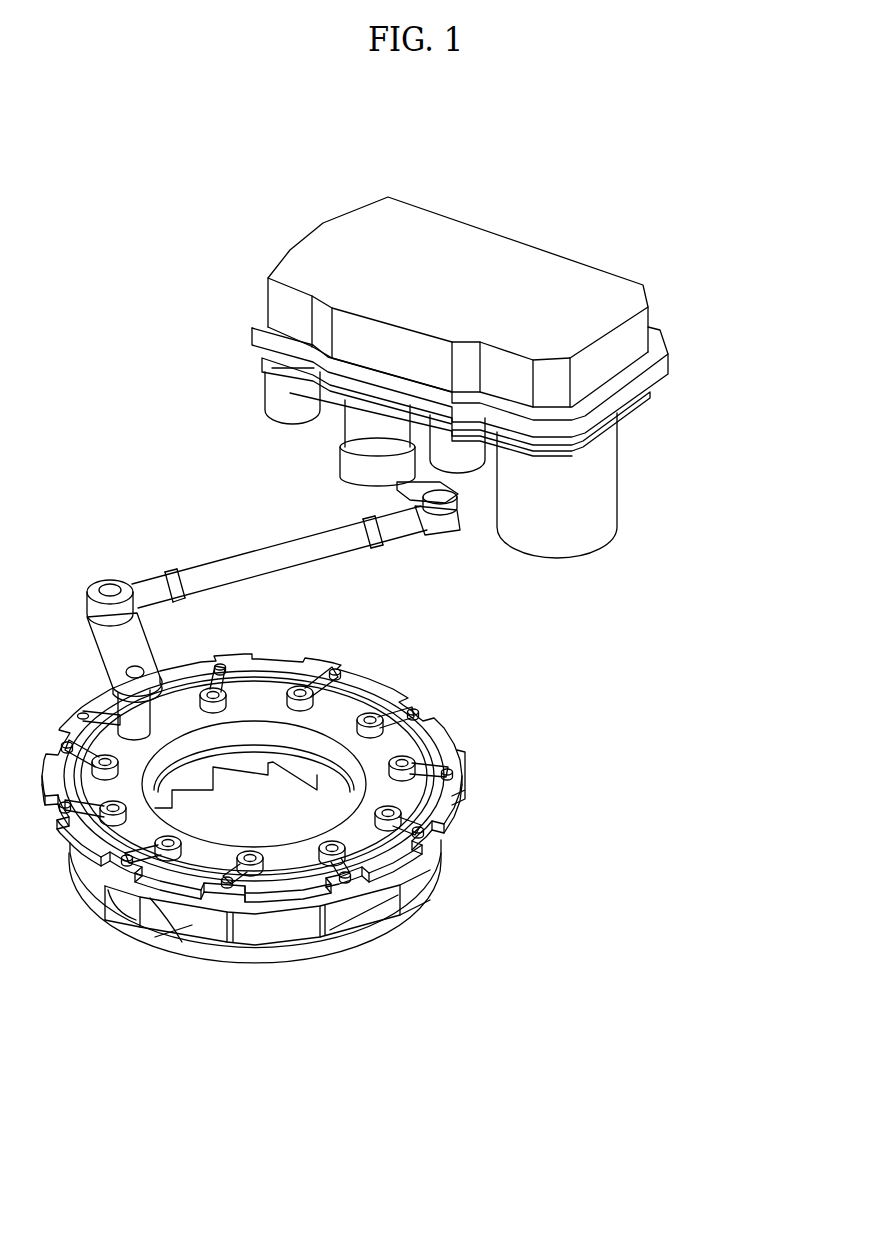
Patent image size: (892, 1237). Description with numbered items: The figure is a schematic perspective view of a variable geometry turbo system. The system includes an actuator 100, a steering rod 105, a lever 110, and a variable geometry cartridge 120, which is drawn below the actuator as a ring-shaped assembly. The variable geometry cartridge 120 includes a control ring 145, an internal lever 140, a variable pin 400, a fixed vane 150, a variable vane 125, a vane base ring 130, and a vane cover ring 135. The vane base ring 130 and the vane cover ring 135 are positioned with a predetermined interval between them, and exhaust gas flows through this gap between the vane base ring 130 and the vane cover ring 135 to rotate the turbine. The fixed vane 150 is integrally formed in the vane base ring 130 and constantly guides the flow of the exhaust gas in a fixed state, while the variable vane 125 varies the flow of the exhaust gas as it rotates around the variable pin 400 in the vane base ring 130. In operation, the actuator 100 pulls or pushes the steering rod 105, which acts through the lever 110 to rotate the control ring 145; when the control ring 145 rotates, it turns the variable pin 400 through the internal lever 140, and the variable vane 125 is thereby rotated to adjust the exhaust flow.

The actuator 100 is at (587, 458).
The steering rod 105 is at (217, 570).
The lever 110 is at (140, 645).
The variable geometry cartridge 120 is at (404, 683).
The variable vane 125 is at (248, 768).
The vane base ring 130 is at (252, 910).
The vane cover ring 135 is at (323, 945).
The internal lever 140 is at (423, 763).
The control ring 145 is at (460, 770).
The fixed vane 150 is at (190, 927).
The variable pin 400 is at (403, 762).